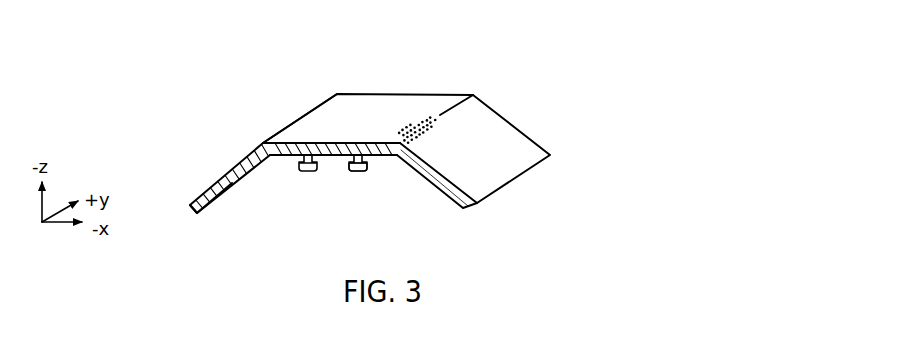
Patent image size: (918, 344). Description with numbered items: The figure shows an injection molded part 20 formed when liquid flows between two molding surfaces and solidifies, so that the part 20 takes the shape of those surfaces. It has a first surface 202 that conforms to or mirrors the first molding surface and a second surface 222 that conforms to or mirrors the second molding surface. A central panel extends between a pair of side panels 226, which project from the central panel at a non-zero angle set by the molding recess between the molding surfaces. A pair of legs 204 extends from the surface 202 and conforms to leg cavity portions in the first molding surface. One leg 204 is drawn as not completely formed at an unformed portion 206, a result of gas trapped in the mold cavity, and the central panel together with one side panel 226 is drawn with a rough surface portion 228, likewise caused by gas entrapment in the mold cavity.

The injection molded part 20 is at (408, 144).
The first surface 202 is at (224, 199).
The legs 204 is at (358, 177).
The unformed portion 206 is at (364, 170).
The second surface 222 is at (388, 100).
The side panels 226 is at (238, 172).
The rough surface portion 228 is at (350, 102).